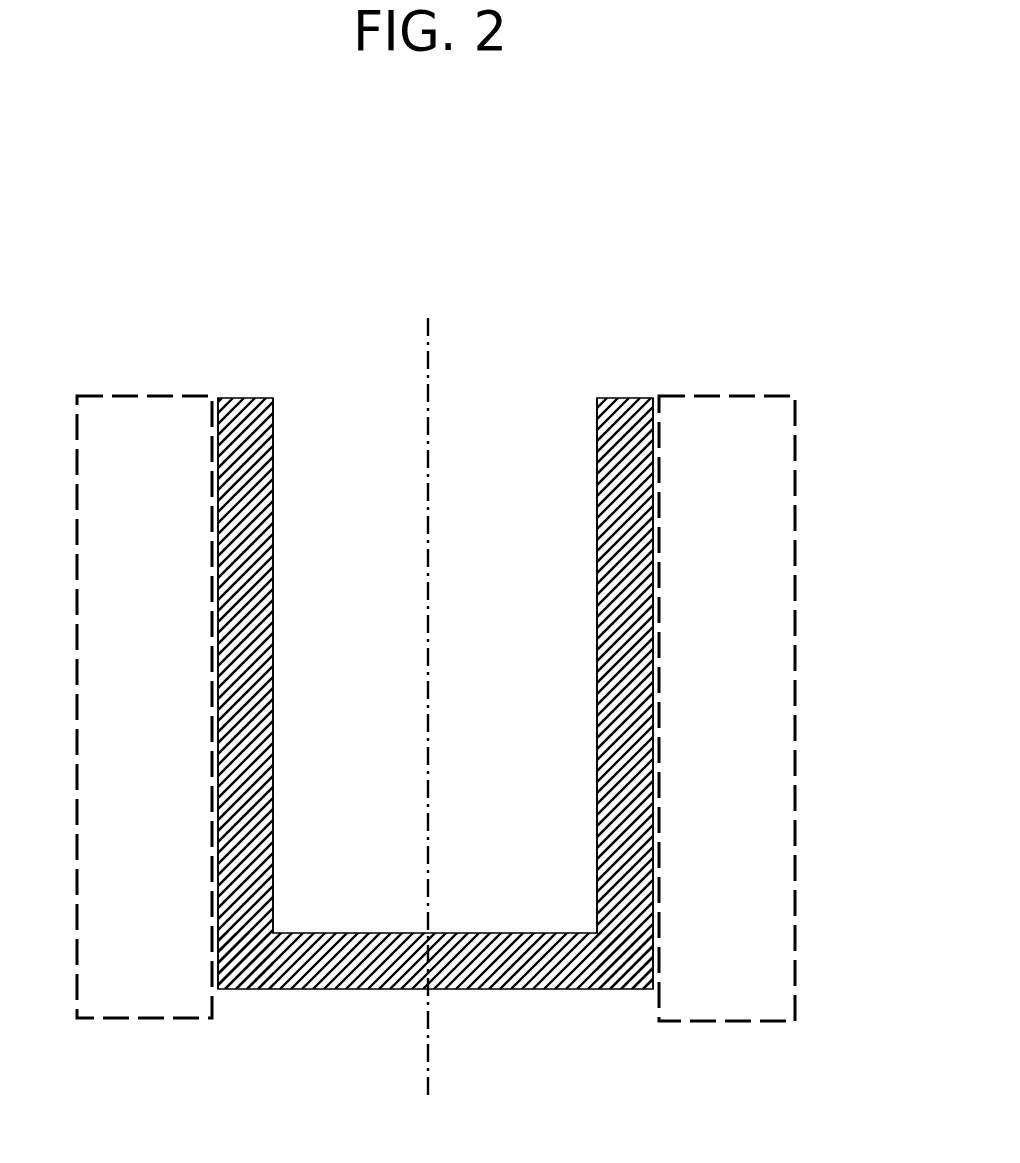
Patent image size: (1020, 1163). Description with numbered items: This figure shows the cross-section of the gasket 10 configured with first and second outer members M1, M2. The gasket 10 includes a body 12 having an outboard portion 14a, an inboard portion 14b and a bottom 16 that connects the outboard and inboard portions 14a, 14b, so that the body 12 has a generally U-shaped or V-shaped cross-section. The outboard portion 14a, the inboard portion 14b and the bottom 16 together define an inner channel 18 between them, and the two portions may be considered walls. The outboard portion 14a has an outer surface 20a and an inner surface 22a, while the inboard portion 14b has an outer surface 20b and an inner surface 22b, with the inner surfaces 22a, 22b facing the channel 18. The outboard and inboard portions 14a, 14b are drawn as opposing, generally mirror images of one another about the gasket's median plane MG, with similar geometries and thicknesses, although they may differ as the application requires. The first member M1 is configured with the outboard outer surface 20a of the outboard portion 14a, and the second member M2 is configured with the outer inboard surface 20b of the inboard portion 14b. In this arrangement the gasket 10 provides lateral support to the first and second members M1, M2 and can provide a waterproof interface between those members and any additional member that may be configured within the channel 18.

The gasket 10 is at (629, 170).
The body 12 is at (520, 503).
The outboard portion 14a is at (246, 397).
The inboard portion 14b is at (626, 397).
The bottom 16 is at (352, 990).
The inner channel 18 is at (399, 496).
The outer surface 20a is at (207, 700).
The outer surface 20b is at (662, 700).
The inner surface 22a is at (284, 700).
The inner surface 22b is at (586, 700).
The first outer member M1 is at (168, 466).
The second outer member M2 is at (750, 466).
The median plane MG is at (459, 706).